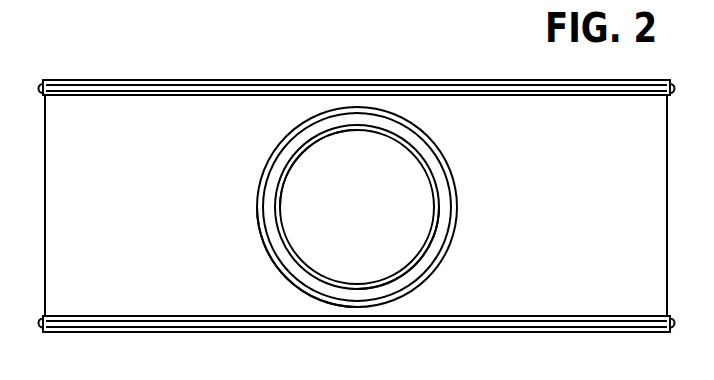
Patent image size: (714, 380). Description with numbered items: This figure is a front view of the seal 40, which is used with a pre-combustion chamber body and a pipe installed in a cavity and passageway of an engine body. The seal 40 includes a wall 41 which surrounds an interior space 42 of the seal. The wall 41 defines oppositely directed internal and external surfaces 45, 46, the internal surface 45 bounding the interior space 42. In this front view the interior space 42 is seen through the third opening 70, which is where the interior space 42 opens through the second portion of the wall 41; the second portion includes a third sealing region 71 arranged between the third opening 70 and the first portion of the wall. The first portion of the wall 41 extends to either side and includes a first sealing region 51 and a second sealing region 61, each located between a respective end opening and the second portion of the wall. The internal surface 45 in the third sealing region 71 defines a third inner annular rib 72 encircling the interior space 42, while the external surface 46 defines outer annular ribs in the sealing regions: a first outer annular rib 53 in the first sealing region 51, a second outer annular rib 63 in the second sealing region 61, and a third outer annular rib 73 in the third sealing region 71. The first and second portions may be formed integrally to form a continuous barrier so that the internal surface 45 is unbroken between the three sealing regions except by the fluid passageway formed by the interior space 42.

The seal 40 is at (357, 187).
The wall 41 is at (356, 205).
The interior space 42 is at (357, 207).
The internal surface 45 is at (318, 169).
The external surface 46 is at (277, 257).
The first sealing region 51 is at (357, 85).
The first outer annular rib 53 is at (356, 115).
The second sealing region 61 is at (357, 324).
The second outer annular rib 63 is at (356, 302).
The third opening 70 is at (357, 207).
The third sealing region 71 is at (384, 207).
The third inner annular rib 72 is at (398, 248).
The third outer annular rib 73 is at (376, 207).